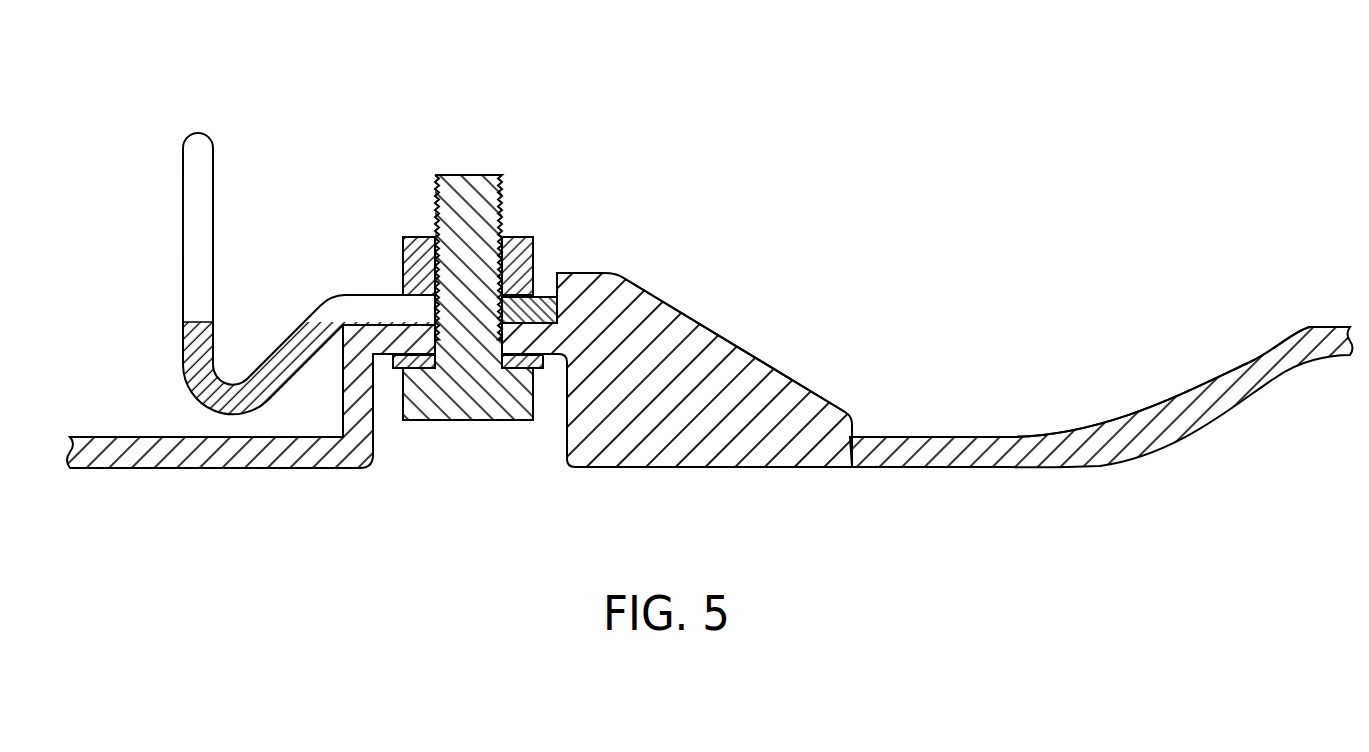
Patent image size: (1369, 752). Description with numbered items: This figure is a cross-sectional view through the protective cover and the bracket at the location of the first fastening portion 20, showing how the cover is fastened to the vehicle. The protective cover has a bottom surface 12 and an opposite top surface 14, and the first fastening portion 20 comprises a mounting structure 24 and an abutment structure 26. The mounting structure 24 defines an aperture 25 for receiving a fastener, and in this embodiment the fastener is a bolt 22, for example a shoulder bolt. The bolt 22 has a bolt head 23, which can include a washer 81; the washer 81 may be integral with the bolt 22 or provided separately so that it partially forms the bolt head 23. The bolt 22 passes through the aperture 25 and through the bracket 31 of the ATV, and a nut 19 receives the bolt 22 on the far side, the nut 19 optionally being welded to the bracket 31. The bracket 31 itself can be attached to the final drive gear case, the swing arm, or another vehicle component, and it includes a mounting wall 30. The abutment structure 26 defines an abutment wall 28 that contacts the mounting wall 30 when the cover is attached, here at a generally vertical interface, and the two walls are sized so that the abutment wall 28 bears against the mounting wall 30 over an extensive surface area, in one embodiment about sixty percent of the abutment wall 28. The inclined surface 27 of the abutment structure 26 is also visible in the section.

The bottom surface 12 is at (1185, 428).
The top surface 14 is at (1170, 398).
The nut 19 is at (412, 243).
The first fastening portion 20 is at (459, 283).
The bolt 22 is at (468, 298).
The bolt head 23 is at (468, 457).
The mounting structure 24 is at (356, 339).
The aperture 25 is at (438, 298).
The abutment structure 26 is at (677, 317).
The inclined surface 27 is at (728, 350).
The abutment wall 28 is at (548, 278).
The mounting wall 30 is at (557, 310).
The bracket 31 is at (183, 306).
The washer 81 is at (423, 363).